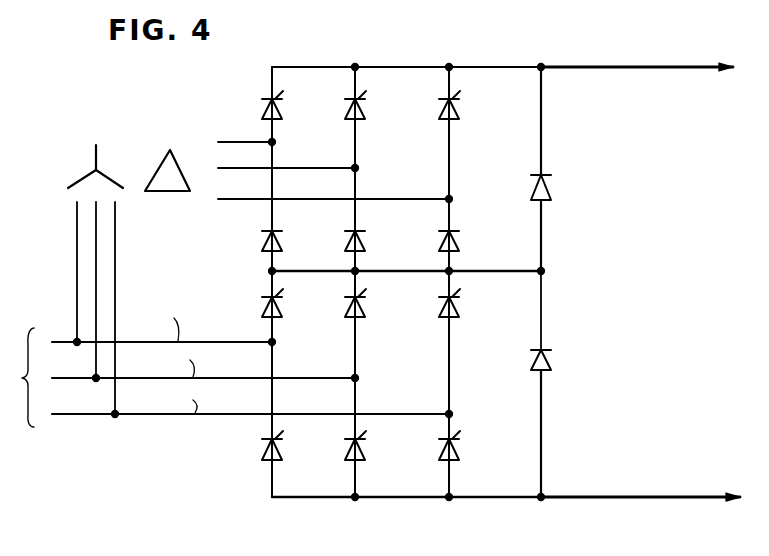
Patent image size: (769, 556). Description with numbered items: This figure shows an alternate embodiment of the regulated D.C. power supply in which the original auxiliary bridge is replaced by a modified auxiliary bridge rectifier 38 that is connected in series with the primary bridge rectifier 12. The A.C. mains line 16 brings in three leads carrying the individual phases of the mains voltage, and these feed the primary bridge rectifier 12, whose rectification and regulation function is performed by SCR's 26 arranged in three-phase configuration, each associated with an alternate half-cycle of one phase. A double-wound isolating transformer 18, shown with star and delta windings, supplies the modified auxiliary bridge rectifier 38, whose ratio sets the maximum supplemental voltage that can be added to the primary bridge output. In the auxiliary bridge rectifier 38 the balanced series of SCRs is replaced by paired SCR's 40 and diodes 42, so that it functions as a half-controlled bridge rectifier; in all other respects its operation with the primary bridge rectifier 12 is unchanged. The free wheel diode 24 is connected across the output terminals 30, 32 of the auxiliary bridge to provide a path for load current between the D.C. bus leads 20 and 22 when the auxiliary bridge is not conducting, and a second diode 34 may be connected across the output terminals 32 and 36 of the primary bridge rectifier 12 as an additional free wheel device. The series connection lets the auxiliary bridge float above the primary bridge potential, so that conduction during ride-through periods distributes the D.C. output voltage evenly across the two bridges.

The primary bridge rectifier 12 is at (228, 486).
The A.C. mains line 16 is at (227, 364).
The transformer 18 is at (80, 133).
The D.C. bus lead 20 is at (614, 65).
The D.C. bus lead 22 is at (587, 495).
The free wheel diode 24 is at (532, 191).
The SCR's 26 is at (345, 313).
The output terminal 30 is at (536, 73).
The output terminal 32 is at (543, 273).
The second diode 34 is at (552, 360).
The output terminal 36 is at (541, 501).
The modified auxiliary bridge rectifier 38 is at (298, 59).
The SCR's 40 is at (345, 112).
The diodes 42 is at (283, 243).